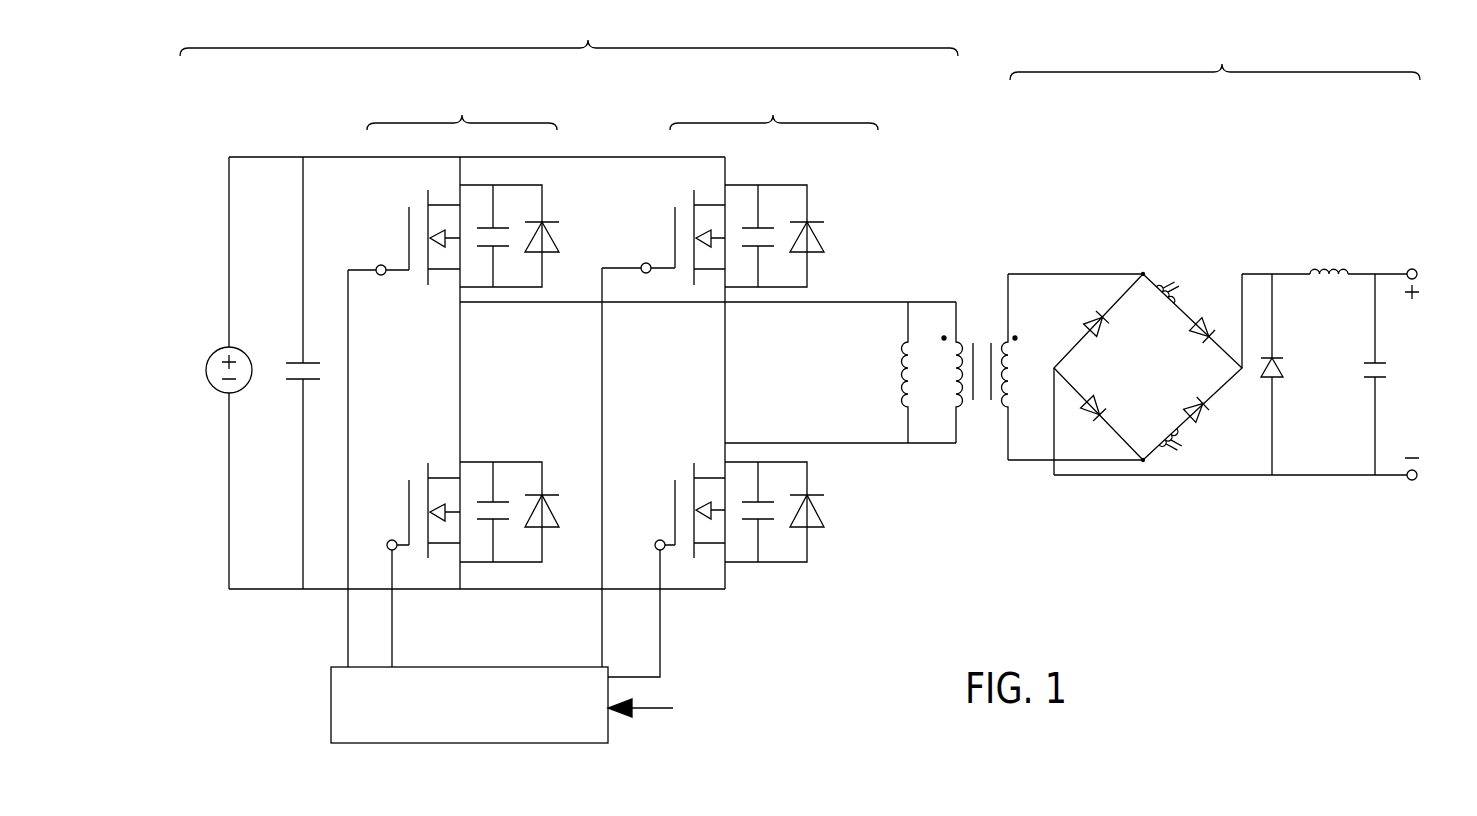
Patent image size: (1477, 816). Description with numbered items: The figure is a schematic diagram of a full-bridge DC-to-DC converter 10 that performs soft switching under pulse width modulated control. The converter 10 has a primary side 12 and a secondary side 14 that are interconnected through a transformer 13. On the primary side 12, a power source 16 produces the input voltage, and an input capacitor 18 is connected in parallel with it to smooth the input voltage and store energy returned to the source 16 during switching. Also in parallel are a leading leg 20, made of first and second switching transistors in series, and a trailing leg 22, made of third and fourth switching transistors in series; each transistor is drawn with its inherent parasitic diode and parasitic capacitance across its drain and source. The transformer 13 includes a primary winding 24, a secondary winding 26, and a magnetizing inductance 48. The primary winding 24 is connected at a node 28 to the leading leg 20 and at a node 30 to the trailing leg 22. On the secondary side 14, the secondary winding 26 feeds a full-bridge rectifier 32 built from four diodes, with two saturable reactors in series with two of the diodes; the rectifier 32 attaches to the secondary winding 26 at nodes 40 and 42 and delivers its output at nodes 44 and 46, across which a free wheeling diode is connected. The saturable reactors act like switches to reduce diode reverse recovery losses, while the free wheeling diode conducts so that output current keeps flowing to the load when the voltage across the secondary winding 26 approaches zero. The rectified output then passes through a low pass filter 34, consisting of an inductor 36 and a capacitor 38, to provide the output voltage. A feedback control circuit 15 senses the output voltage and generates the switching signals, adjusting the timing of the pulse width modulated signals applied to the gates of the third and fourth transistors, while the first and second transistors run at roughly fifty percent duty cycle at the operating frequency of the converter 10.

The full-bridge converter 10 is at (202, 166).
The primary side 12 is at (569, 34).
The transformer 13 is at (979, 355).
The secondary side 14 is at (1215, 56).
The feedback control circuit 15 is at (608, 732).
The power source 16 is at (217, 347).
The input capacitor 18 is at (283, 373).
The leading leg 20 is at (463, 376).
The trailing leg 22 is at (740, 381).
The primary winding 24 is at (955, 410).
The secondary winding 26 is at (1008, 410).
The node 28 is at (462, 306).
The node 30 is at (727, 443).
The full-bridge rectifier 32 is at (1129, 356).
The low pass filter 34 is at (1264, 336).
The inductor 36 is at (1312, 270).
The capacitor 38 is at (1386, 372).
The node 40 is at (1143, 274).
The node 42 is at (1143, 460).
The node 44 is at (1056, 368).
The node 46 is at (1240, 368).
The magnetizing inductance 48 is at (905, 364).